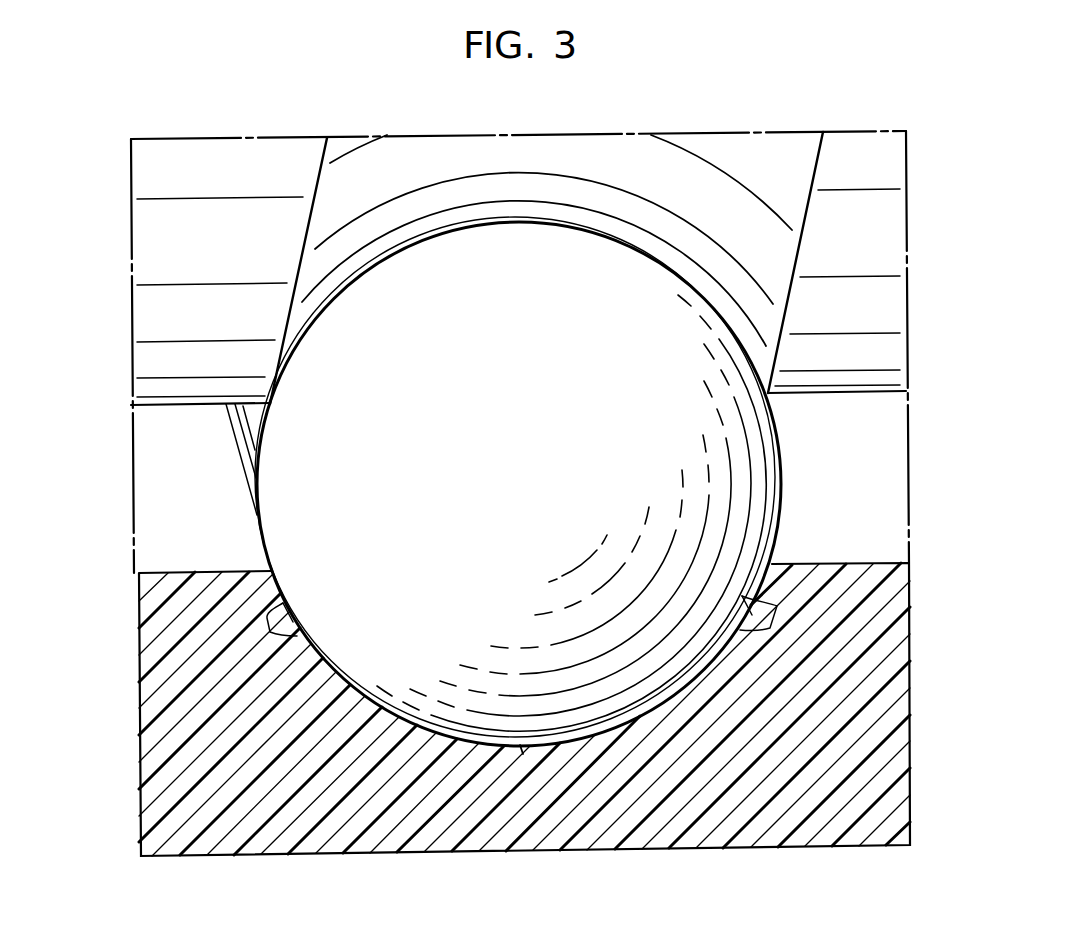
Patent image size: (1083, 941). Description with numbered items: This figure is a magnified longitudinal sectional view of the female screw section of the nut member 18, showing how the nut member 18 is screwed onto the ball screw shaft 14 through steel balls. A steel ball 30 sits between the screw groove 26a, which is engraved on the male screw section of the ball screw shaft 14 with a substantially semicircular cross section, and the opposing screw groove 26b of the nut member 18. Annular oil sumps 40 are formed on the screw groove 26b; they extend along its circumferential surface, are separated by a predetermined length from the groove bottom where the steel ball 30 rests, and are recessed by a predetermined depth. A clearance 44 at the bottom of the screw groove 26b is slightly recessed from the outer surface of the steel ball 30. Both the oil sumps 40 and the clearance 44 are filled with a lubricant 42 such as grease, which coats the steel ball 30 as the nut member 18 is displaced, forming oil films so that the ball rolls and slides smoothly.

The ball screw shaft 14 is at (862, 126).
The nut member 18 is at (695, 852).
The screw groove 26a is at (813, 177).
The screw groove 26b is at (657, 715).
The steel ball 30 is at (318, 524).
The annular oil sump 40 is at (280, 618).
The lubricant 42 is at (293, 622).
The clearance 44 is at (532, 748).